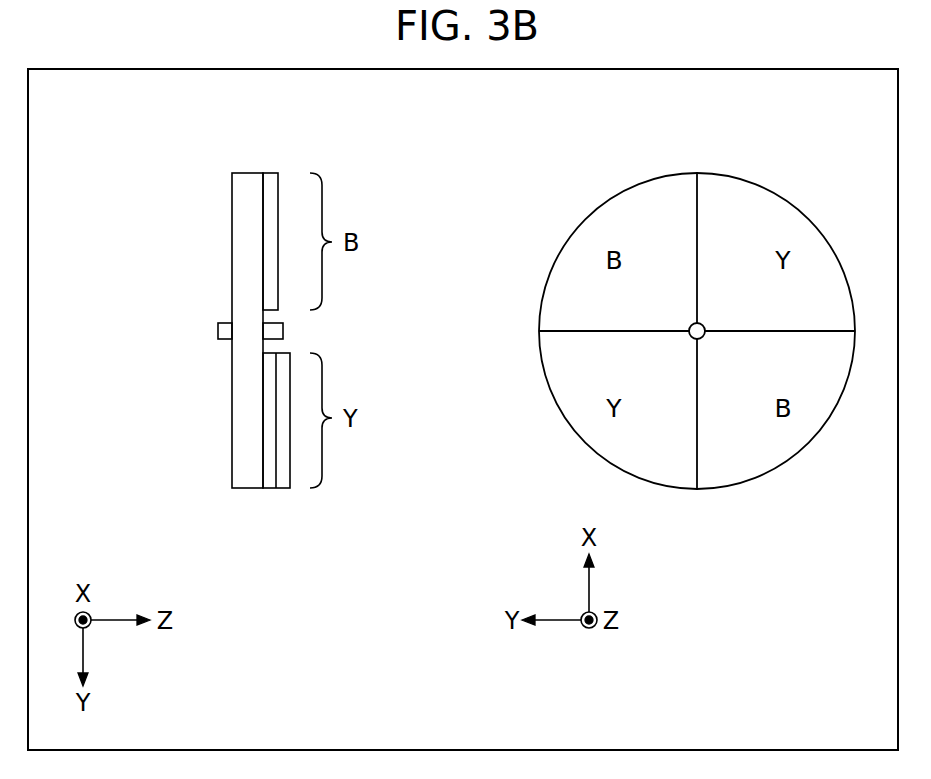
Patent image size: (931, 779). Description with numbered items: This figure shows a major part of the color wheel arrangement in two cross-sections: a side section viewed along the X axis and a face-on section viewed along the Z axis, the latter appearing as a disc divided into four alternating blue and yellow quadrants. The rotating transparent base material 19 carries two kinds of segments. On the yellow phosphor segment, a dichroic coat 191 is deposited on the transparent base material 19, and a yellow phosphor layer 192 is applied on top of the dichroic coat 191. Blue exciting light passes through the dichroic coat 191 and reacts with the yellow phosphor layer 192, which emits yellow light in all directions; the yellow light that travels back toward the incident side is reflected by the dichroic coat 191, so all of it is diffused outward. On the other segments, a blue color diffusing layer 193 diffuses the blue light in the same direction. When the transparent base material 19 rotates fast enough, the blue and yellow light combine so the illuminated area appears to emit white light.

The transparent base material 19 is at (279, 336).
The dichroic coat 191 is at (268, 488).
The yellow phosphor layer 192 is at (283, 488).
The blue color diffusing layer 193 is at (272, 173).